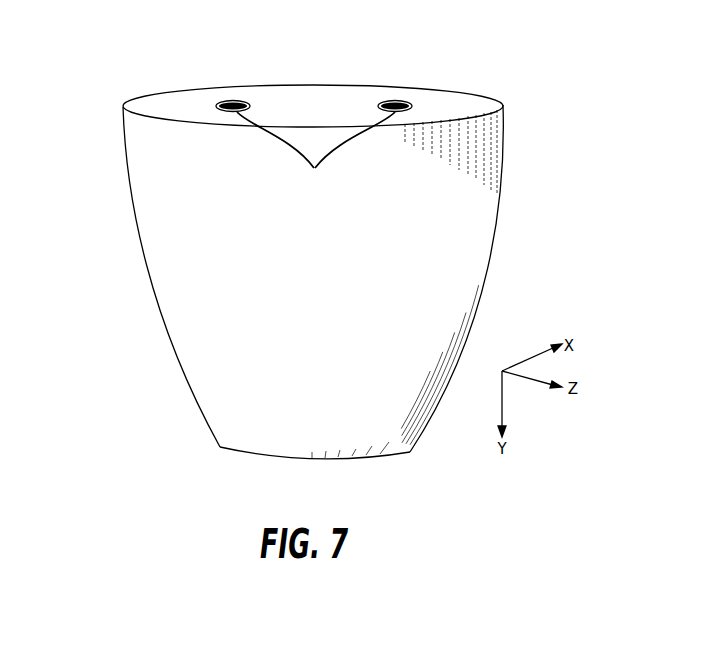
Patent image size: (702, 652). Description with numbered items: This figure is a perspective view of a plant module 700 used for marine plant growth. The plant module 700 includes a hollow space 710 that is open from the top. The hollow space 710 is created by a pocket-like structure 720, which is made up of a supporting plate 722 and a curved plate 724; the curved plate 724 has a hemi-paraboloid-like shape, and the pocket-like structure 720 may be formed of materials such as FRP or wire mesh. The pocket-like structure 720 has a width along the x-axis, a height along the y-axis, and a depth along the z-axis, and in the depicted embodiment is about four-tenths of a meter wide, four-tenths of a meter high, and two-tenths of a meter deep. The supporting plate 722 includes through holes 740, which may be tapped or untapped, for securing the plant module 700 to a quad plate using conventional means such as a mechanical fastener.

The plant module 700 is at (307, 229).
The hollow space 710 is at (362, 94).
The pocket-like structure 720 is at (483, 84).
The supporting plate 722 is at (208, 88).
The curved plate 724 is at (172, 330).
The through holes 740 is at (316, 161).